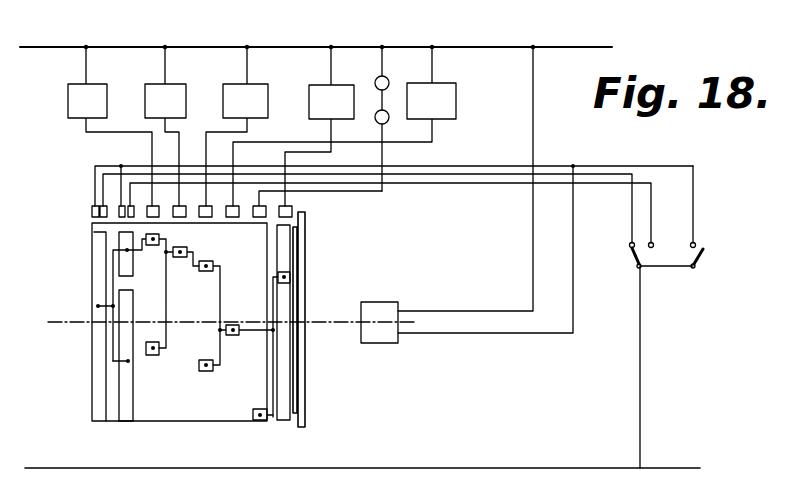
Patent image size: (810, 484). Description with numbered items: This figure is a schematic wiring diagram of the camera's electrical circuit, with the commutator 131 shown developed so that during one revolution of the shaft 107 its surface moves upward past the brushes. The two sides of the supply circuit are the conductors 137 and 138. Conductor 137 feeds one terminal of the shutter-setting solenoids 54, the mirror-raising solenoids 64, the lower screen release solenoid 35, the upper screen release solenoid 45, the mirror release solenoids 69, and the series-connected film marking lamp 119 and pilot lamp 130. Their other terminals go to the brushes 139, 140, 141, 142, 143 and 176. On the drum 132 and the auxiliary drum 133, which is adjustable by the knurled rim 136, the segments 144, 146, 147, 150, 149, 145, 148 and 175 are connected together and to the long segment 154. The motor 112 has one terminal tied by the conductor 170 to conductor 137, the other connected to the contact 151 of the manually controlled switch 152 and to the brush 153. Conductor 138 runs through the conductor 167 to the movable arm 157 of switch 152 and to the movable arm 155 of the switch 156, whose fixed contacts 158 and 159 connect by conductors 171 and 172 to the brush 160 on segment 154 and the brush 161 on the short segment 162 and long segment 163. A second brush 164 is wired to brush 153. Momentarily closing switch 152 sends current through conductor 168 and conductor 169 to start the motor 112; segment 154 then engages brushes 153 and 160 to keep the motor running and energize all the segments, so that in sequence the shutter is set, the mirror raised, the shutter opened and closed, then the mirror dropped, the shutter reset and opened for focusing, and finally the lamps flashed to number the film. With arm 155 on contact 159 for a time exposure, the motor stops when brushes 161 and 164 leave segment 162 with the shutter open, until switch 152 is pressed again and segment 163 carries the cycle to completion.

The current supply conductor 137 is at (50, 45).
The shutter-setting solenoids 54 is at (93, 84).
The mirror-raising solenoids 64 is at (173, 84).
The release solenoid for lower shutter screen 35 is at (252, 84).
The release solenoid for upper shutter screen 45 is at (335, 85).
The film marking lamp 119 is at (388, 78).
The pilot lamp 130 is at (376, 120).
The mirror release solenoids 69 is at (455, 83).
The conductor 170 is at (533, 127).
The conductor 168 is at (668, 166).
The conductor 171 is at (630, 193).
The conductor 172 is at (652, 202).
The fixed contact 158 is at (630, 242).
The fixed contact 159 is at (652, 242).
The contact of manually controlled switch 151 is at (697, 243).
The manually controlled switch 152 is at (715, 259).
The movable arm 155 is at (636, 258).
The manually controlled switch 156 is at (645, 276).
The movable arm 157 is at (698, 270).
The motor 112 is at (376, 302).
The conductor 169 is at (537, 336).
The conductor 167 is at (642, 378).
The knurled rim 136 is at (306, 390).
The auxiliary insulated drum 133 is at (286, 421).
The commutator 131 is at (164, 421).
The drum 132 is at (212, 421).
The current supply conductor 138 is at (46, 468).
The shaft 107 is at (53, 326).
The long segment 154 is at (92, 264).
The brush 160 is at (92, 203).
The brush 153 is at (90, 213).
The second brush 164 is at (121, 205).
The brush 161 is at (130, 205).
The brush 139 is at (155, 206).
The brush 140 is at (181, 206).
The brush 141 is at (207, 206).
The brush 143 is at (235, 206).
The brush 176 is at (259, 207).
The brush 142 is at (293, 210).
The segment 144 is at (159, 240).
The segment 146 is at (187, 250).
The segment 147 is at (213, 266).
The short segment 162 is at (128, 271).
The long segment 163 is at (130, 313).
The segment 145 is at (153, 355).
The segment 148 is at (201, 361).
The segment 149 is at (234, 336).
The segment 150 is at (291, 278).
The segment 175 is at (257, 409).